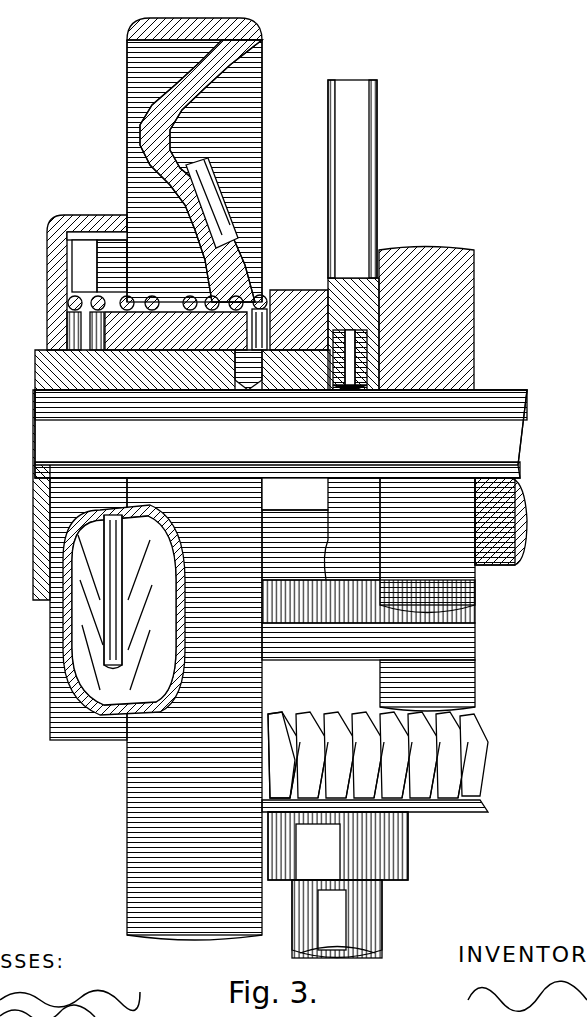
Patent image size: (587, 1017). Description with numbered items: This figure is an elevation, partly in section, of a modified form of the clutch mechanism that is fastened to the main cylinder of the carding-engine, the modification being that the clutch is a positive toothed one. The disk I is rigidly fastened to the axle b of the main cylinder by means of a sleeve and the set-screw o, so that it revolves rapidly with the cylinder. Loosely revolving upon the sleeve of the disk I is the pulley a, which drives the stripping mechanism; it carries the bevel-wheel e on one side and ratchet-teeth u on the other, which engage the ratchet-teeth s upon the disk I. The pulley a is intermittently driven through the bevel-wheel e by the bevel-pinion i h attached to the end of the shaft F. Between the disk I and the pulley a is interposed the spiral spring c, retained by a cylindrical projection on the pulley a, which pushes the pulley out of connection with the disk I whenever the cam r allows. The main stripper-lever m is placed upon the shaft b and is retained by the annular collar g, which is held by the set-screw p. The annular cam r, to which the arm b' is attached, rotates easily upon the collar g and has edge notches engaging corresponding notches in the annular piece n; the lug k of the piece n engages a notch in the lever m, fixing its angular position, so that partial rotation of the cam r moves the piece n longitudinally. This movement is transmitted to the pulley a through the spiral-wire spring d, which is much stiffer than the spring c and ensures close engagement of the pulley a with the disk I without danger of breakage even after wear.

The pulley a is at (127, 42).
The axle of the main cylinder b is at (291, 477).
The arm b' is at (365, 179).
The spiral spring c is at (68, 305).
The spiral-wire spring d is at (264, 294).
The bevel-wheel e is at (228, 213).
The annular collar g is at (360, 340).
The bevel-pinion h is at (462, 765).
The bevel-pinion hub i is at (395, 843).
The lug k is at (339, 652).
The main stripper-lever m is at (468, 345).
The annular piece n is at (292, 292).
The set-screw o is at (262, 370).
The set-screw p is at (356, 358).
The annular cam r is at (321, 529).
The ratchet-teeth s is at (64, 644).
The ratchet-teeth u is at (124, 560).
The shaft F is at (382, 912).
The disk I is at (76, 224).